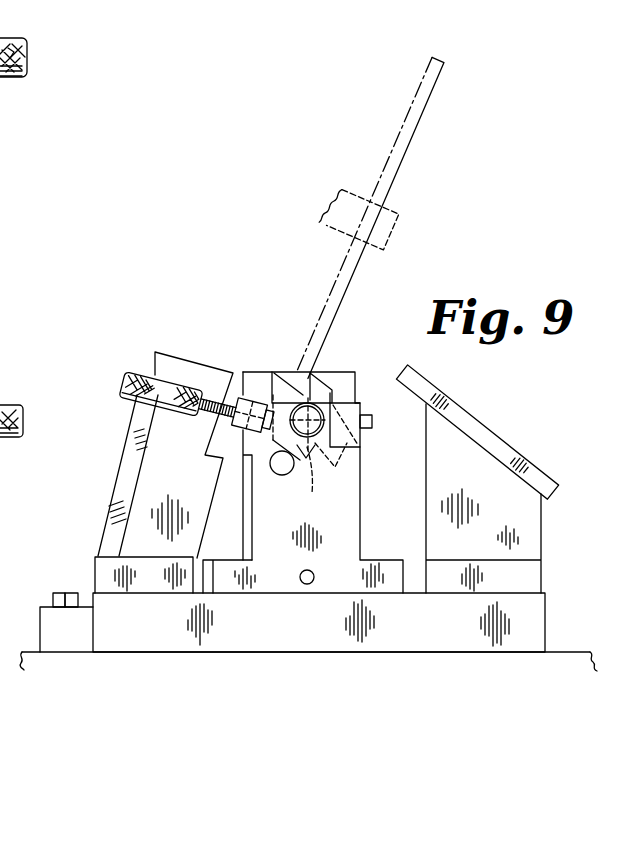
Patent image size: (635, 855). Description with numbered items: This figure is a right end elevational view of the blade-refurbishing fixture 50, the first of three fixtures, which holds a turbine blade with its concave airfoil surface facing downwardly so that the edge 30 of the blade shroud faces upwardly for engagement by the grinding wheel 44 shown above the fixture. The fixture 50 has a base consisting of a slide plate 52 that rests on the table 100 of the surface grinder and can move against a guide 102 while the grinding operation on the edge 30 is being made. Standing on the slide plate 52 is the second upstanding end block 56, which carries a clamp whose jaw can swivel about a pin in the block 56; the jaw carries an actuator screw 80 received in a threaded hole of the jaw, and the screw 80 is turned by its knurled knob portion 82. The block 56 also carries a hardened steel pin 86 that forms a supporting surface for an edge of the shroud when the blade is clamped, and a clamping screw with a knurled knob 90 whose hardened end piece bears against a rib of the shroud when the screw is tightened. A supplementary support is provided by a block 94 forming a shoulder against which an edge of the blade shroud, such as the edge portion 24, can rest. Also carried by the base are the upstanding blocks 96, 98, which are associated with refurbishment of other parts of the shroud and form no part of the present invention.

The edge portion 24 is at (325, 477).
The edge portion 30 is at (303, 383).
The grinding wheel 44 is at (400, 147).
The fixture 50 is at (0, 136).
The slide plate 52 is at (100, 602).
The second upstanding end block 56 is at (353, 520).
The actuator screw 80 is at (217, 405).
The knurled knob portion 82 is at (137, 372).
The hardened steel pin 86 is at (273, 476).
The knurled knob 90 is at (8, 50).
The block 94 is at (348, 413).
The upstanding block 96 is at (527, 517).
The upstanding block 98 is at (492, 435).
The table 100 is at (572, 657).
The guide 102 is at (48, 620).